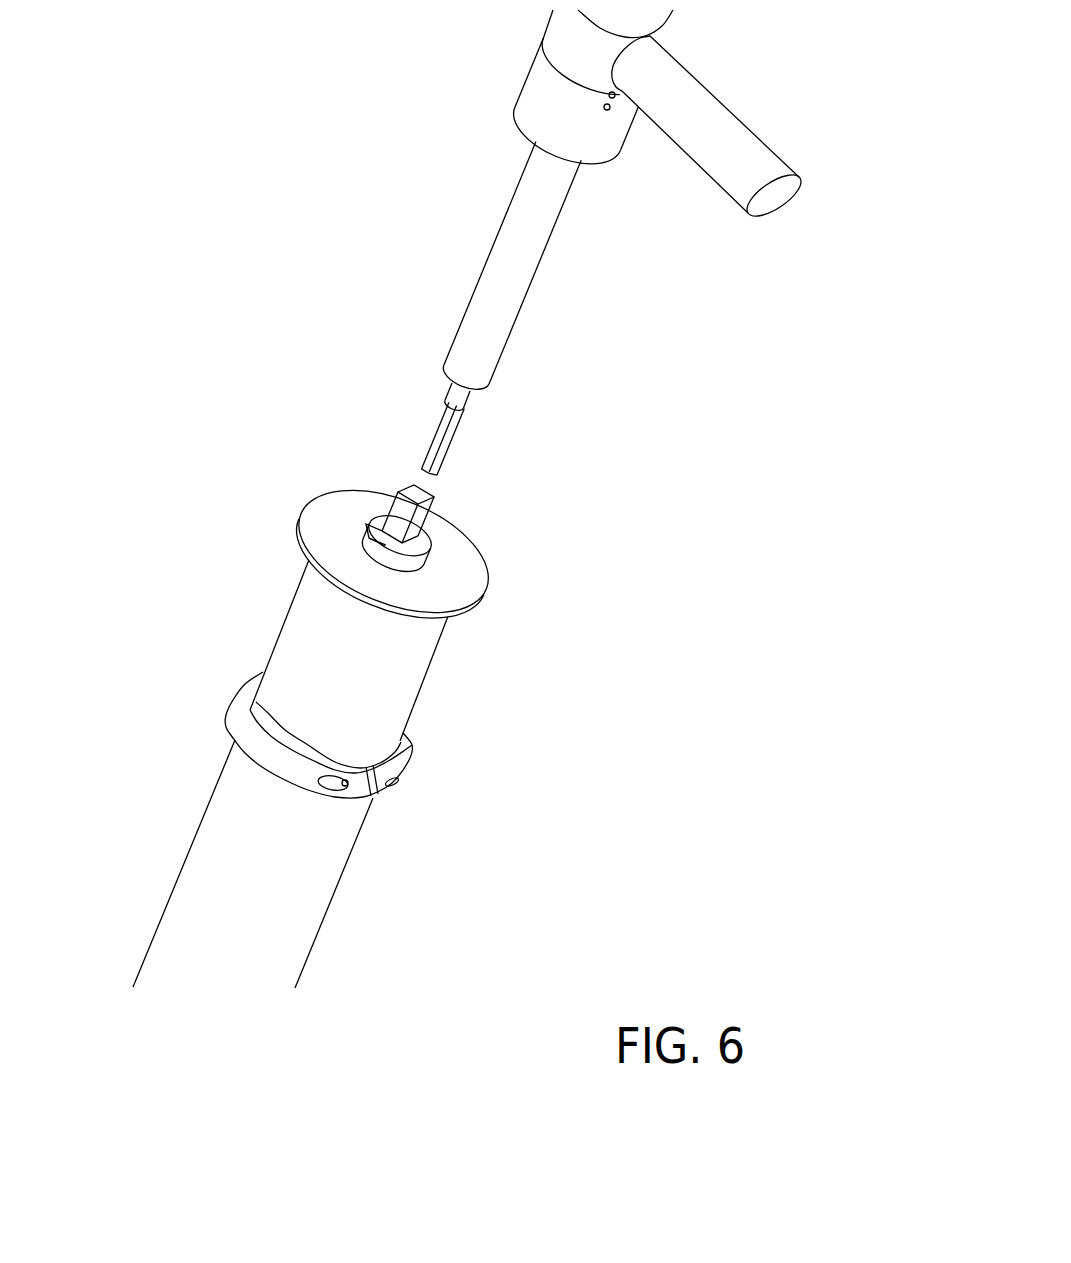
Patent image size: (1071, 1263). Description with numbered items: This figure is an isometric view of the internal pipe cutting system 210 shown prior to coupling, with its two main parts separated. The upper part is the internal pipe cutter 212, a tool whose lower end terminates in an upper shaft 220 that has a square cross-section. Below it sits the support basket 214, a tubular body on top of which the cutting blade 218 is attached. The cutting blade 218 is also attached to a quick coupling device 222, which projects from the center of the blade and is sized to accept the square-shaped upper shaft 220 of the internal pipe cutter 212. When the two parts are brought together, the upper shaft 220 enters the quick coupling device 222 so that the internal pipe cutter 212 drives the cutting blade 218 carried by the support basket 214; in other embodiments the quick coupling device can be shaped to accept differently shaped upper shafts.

The internal pipe cutting system 210 is at (178, 162).
The internal pipe cutter 212 is at (573, 268).
The support basket 214 is at (405, 847).
The cutting blade 218 is at (470, 578).
The upper shaft 220 is at (450, 437).
The quick coupling device 222 is at (420, 522).